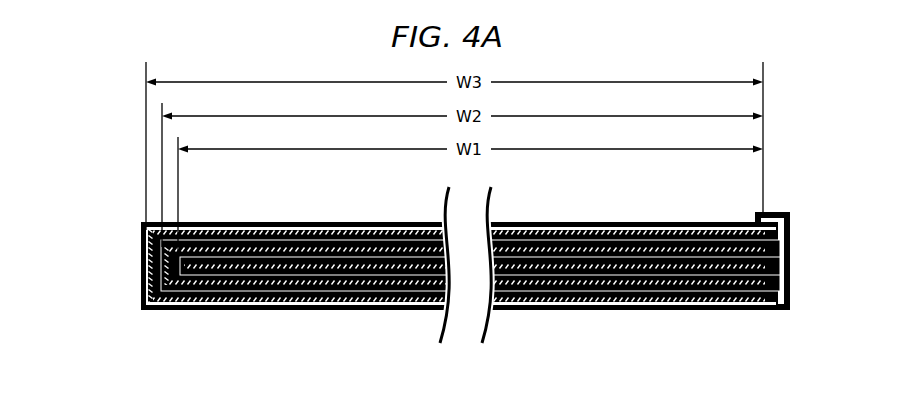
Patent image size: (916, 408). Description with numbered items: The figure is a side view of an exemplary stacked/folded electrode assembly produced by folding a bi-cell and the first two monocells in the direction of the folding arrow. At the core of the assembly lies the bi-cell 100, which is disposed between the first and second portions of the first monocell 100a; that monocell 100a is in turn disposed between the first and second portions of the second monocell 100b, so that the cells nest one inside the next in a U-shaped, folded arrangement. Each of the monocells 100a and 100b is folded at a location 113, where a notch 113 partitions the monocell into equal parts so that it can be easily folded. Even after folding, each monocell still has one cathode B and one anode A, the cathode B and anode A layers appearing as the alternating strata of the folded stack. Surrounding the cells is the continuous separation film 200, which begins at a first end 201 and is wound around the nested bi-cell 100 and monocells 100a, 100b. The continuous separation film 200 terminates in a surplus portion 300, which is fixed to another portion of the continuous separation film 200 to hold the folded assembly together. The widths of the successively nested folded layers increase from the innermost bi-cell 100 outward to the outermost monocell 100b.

The bi-cell 100 is at (470, 275).
The monocell 100a is at (763, 250).
The monocell 100b is at (767, 232).
The notch 113 is at (150, 246).
The continuous separation film 200 is at (408, 311).
The first end 201 is at (765, 255).
The surplus portion 300 is at (769, 212).
The anode A is at (593, 260).
The cathode B is at (617, 268).